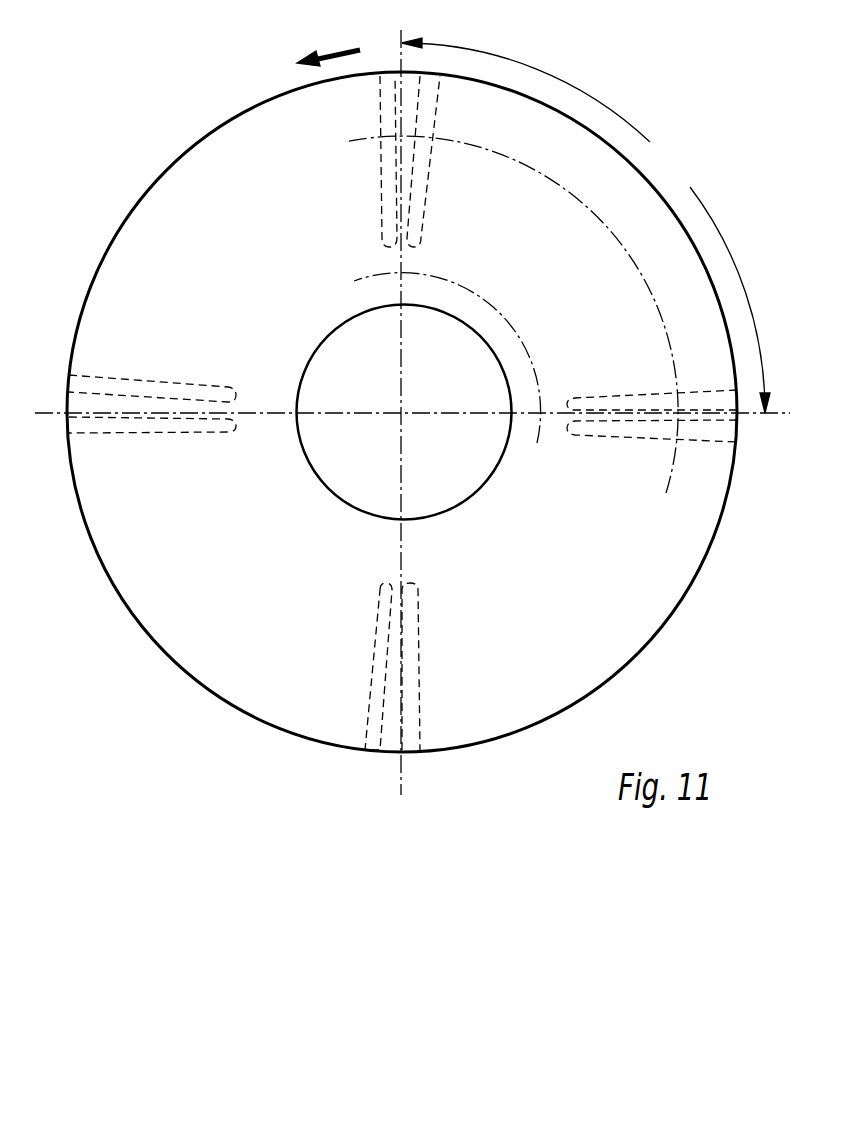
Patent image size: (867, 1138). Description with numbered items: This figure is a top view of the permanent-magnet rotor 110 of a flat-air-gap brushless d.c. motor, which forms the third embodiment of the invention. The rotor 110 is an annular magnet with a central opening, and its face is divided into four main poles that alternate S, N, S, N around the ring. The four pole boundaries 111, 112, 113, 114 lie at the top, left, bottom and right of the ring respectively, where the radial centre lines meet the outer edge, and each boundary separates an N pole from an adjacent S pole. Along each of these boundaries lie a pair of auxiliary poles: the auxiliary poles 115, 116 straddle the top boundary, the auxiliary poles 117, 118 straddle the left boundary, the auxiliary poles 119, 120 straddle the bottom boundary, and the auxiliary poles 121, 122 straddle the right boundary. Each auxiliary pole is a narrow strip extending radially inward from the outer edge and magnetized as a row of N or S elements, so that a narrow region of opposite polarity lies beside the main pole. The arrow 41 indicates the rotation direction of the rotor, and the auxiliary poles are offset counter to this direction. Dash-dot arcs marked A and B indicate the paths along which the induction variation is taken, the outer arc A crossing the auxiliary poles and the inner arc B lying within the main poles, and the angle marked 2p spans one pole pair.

The permanent-magnet rotor 110 is at (152, 138).
The direction of rotation arrow 41 is at (348, 44).
The pole boundary 111 is at (404, 30).
The pole boundary 112 is at (50, 417).
The pole boundary 113 is at (403, 770).
The pole boundary 114 is at (750, 415).
The auxiliary pole 115 is at (435, 107).
The auxiliary pole 116 is at (378, 116).
The auxiliary pole 117 is at (127, 380).
The auxiliary pole 118 is at (127, 433).
The auxiliary pole 119 is at (375, 680).
The auxiliary pole 120 is at (418, 680).
The auxiliary pole 121 is at (625, 440).
The auxiliary pole 122 is at (632, 396).